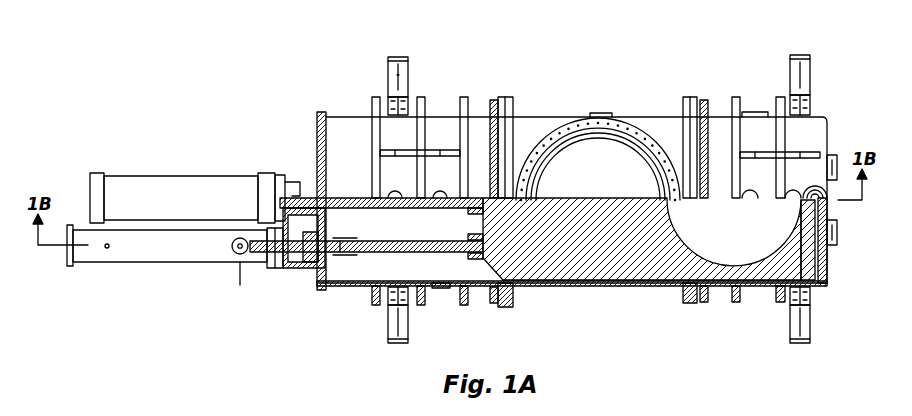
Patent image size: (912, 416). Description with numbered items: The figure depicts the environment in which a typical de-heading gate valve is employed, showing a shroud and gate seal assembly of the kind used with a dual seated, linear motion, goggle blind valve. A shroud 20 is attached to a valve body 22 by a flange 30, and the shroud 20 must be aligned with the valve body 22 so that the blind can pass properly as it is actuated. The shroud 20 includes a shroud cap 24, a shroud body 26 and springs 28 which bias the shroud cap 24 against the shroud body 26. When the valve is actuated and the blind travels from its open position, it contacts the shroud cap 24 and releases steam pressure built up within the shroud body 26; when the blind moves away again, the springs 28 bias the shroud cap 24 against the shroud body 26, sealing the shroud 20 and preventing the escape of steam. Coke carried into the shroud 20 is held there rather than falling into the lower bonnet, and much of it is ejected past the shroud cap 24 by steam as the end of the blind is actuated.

The shroud 20 is at (330, 79).
The valve body 22 is at (664, 118).
The shroud cap 24 is at (318, 126).
The shroud body 26 is at (441, 118).
The springs 28 is at (397, 148).
The flange 30 is at (492, 76).